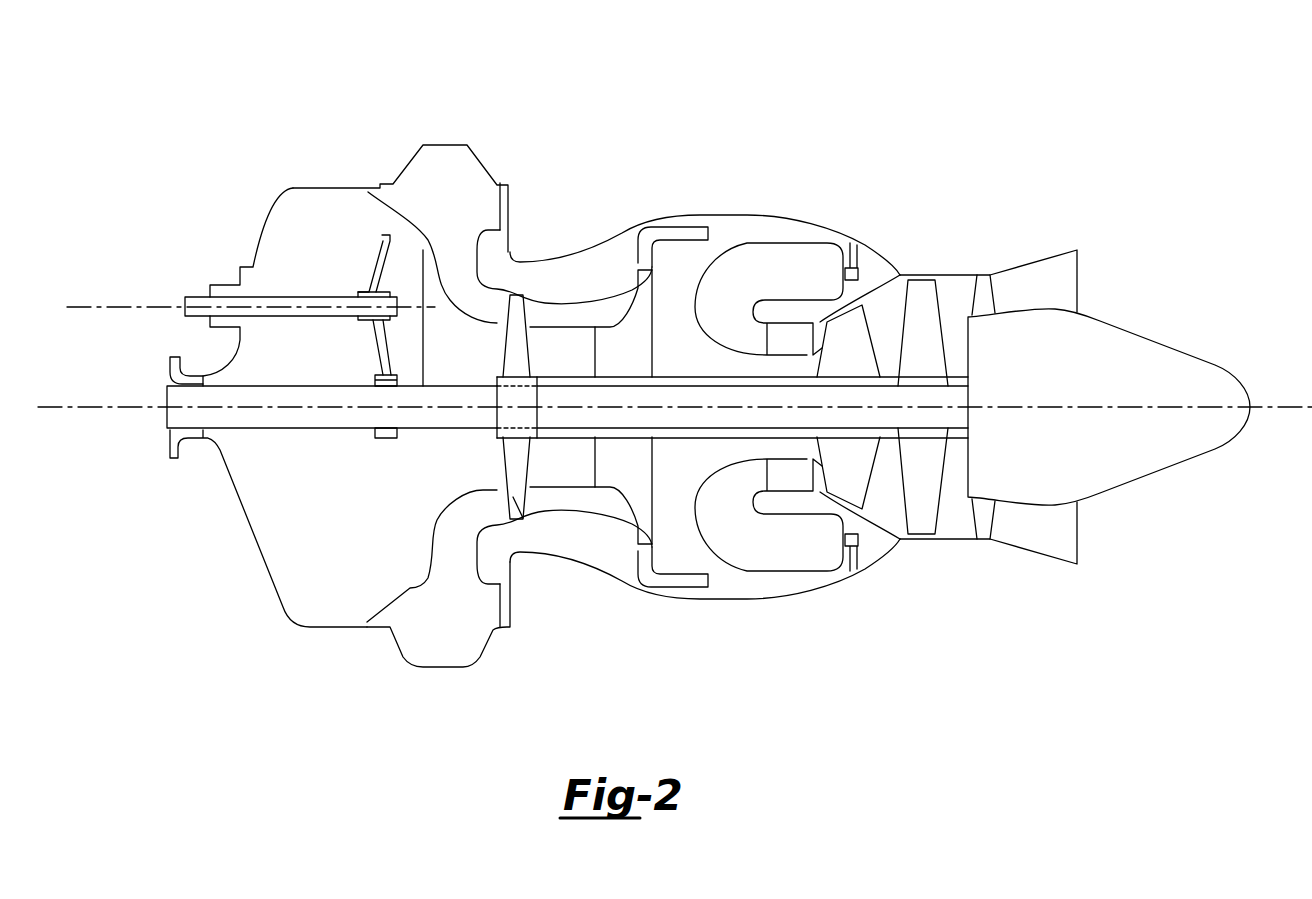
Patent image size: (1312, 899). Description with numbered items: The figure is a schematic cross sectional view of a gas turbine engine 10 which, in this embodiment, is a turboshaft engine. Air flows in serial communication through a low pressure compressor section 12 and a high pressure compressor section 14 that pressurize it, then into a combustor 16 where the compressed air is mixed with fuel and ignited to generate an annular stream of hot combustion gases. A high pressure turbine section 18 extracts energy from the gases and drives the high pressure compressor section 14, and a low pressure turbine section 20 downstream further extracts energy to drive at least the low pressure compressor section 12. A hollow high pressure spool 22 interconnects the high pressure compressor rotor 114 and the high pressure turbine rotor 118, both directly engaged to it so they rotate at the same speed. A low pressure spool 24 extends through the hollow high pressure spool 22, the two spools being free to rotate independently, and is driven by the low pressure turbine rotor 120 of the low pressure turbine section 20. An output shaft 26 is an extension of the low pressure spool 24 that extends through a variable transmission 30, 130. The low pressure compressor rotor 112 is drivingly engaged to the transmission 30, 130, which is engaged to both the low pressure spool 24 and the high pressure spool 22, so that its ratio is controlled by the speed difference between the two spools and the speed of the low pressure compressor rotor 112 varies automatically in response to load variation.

The gas turbine engine 10 is at (1082, 165).
The low pressure compressor section 12 is at (491, 313).
The high pressure compressor section 14 is at (616, 250).
The combustor 16 is at (768, 270).
The high pressure turbine section 18 is at (844, 300).
The low pressure turbine section 20 is at (920, 252).
The high pressure spool 22 is at (680, 440).
The low pressure spool 24 is at (420, 255).
The output shaft 26 is at (247, 423).
The variable transmission 30 is at (503, 417).
The variable transmission 130 is at (517, 407).
The low pressure compressor rotor 112 is at (527, 520).
The high pressure compressor rotor 114 is at (610, 343).
The high pressure turbine rotor 118 is at (892, 541).
The low pressure turbine rotor 120 is at (933, 530).